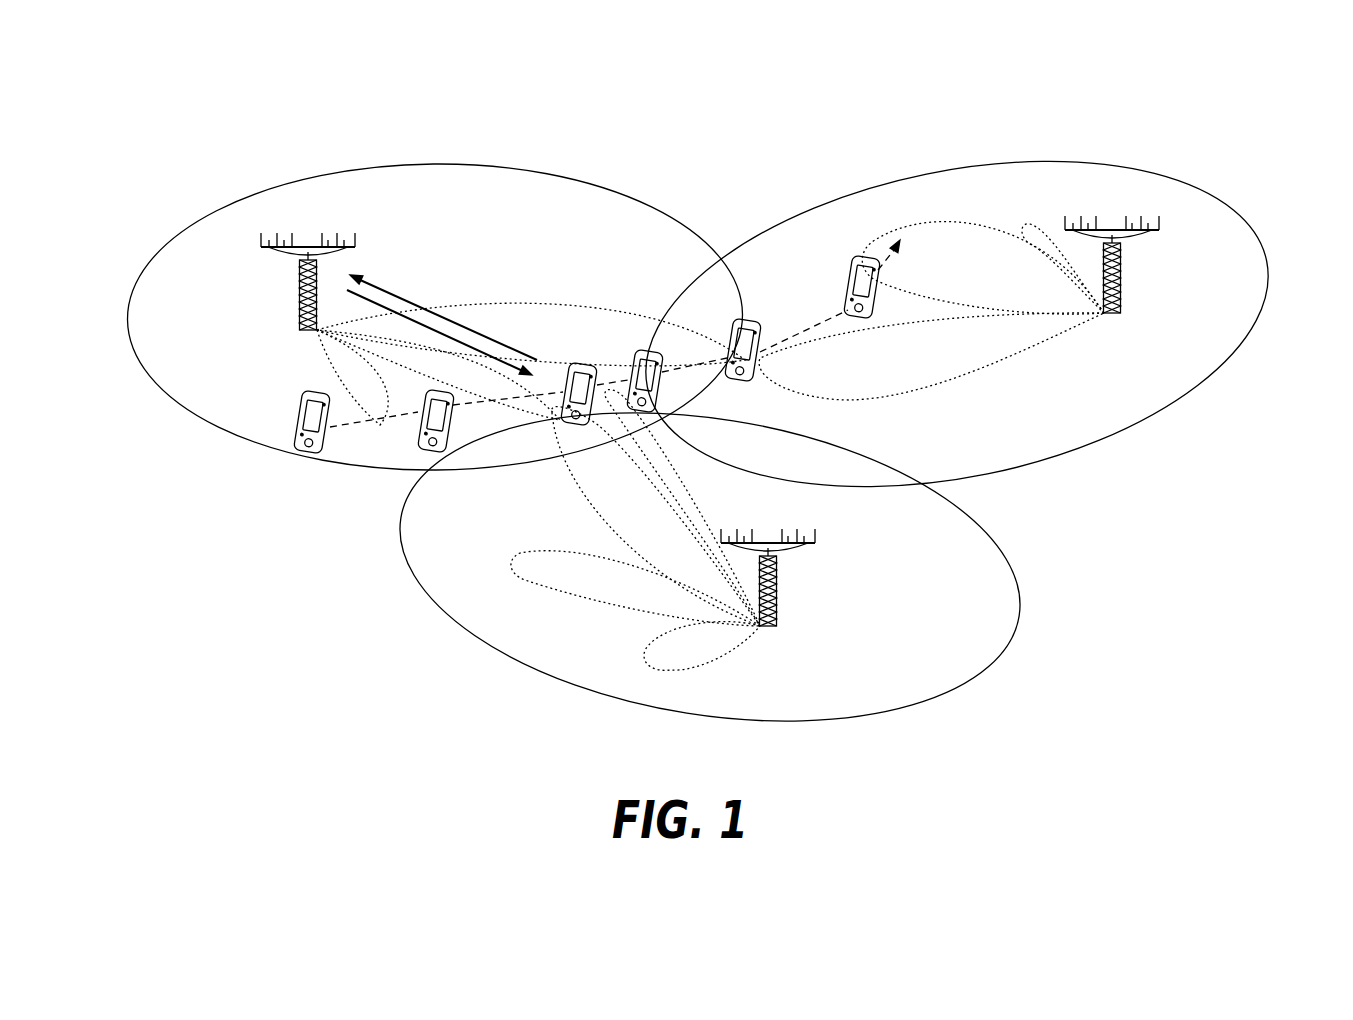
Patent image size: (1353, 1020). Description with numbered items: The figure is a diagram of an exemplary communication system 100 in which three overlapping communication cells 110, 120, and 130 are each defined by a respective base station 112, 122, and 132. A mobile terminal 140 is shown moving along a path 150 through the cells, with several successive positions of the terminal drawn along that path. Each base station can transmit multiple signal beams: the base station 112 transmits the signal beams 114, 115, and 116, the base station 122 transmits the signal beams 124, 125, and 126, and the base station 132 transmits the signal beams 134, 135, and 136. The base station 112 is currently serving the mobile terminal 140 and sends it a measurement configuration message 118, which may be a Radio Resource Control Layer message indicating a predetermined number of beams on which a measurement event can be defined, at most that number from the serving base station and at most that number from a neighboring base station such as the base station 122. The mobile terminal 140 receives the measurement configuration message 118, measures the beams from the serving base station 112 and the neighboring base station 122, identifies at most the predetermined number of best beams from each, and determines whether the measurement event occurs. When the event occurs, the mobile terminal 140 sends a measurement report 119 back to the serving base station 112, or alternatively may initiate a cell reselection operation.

The communication system 100 is at (1183, 117).
The communication cell 110 is at (180, 406).
The base station 112 is at (300, 272).
The signal beam 114 is at (627, 326).
The signal beam 115 is at (413, 372).
The signal beam 116 is at (335, 367).
The measurement configuration message 118 is at (478, 349).
The measurement report 119 is at (387, 281).
The communication cell 120 is at (833, 728).
The base station 122 is at (795, 548).
The signal beam 124 is at (592, 486).
The signal beam 125 is at (556, 581).
The signal beam 126 is at (680, 658).
The communication cell 130 is at (1148, 418).
The base station 132 is at (1142, 236).
The signal beam 134 is at (990, 349).
The signal beam 135 is at (956, 260).
The signal beam 136 is at (1042, 238).
The mobile terminal 140 is at (578, 374).
The path 150 is at (793, 336).